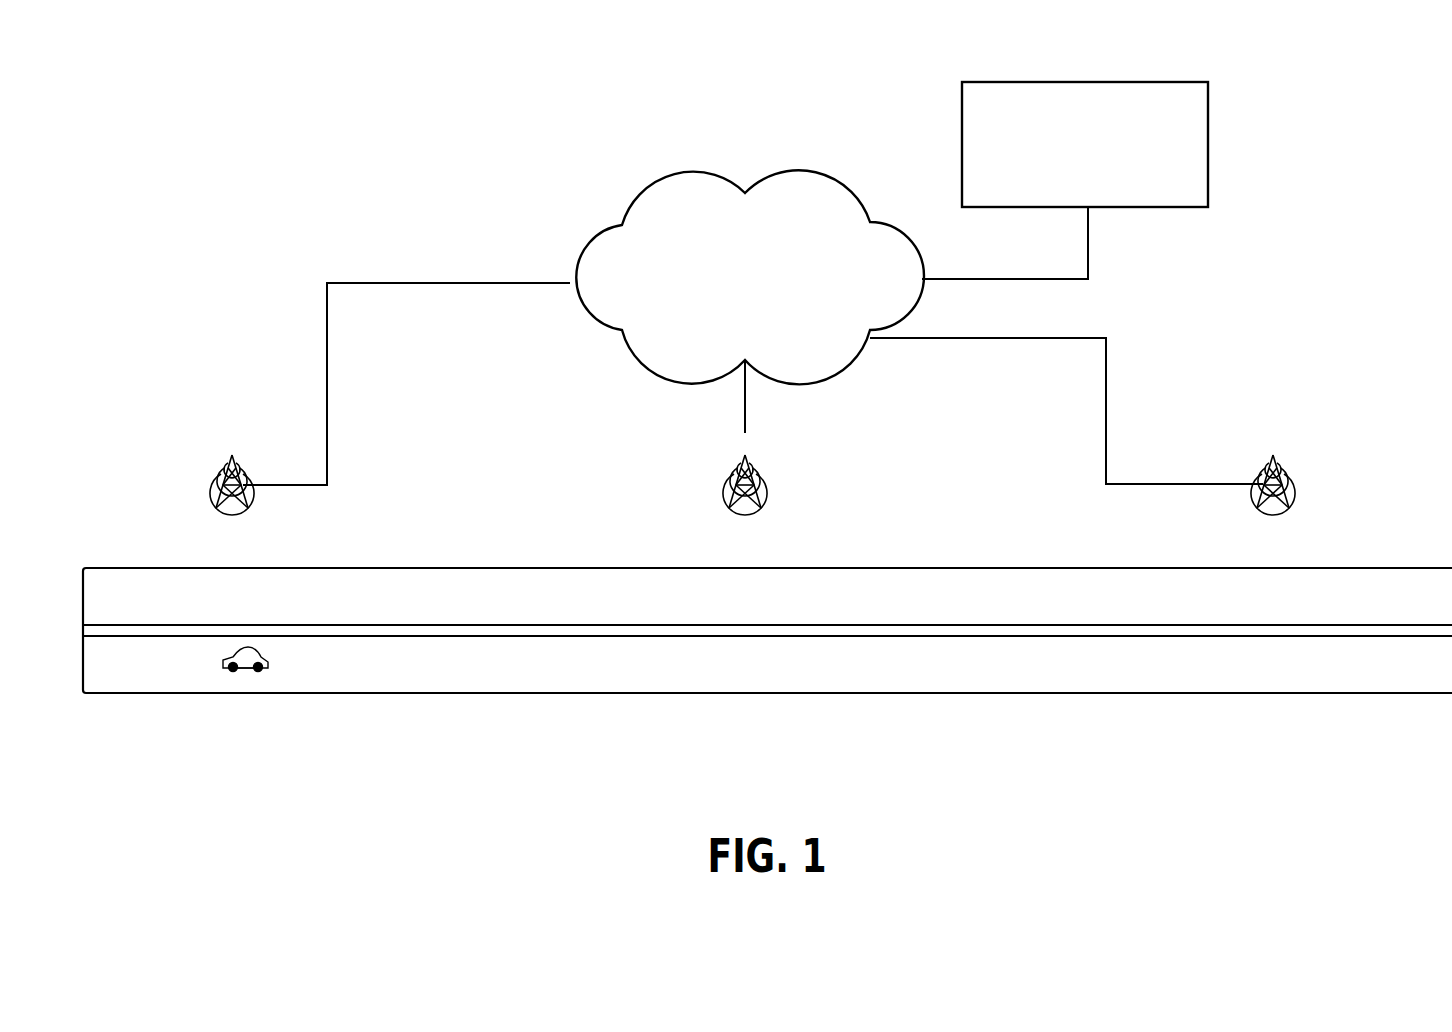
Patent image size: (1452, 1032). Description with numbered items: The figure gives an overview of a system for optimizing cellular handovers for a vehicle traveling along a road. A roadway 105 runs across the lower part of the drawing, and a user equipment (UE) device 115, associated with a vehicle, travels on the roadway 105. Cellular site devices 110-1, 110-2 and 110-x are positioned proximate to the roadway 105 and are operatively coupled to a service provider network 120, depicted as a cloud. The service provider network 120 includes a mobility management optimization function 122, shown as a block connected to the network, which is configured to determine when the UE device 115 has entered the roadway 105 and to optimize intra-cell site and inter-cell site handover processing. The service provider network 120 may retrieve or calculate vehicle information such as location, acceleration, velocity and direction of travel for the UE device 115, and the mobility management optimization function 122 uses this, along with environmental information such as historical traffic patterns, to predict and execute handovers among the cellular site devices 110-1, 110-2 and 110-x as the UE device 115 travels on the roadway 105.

The roadway 105 is at (1345, 597).
The cellular site device 110-1 is at (227, 448).
The cellular site device 110-2 is at (740, 500).
The cellular site device 110-x is at (1277, 438).
The user equipment (UE) device 115 is at (235, 650).
The service provider network 120 is at (750, 277).
The mobility management optimization function 122 is at (1180, 183).